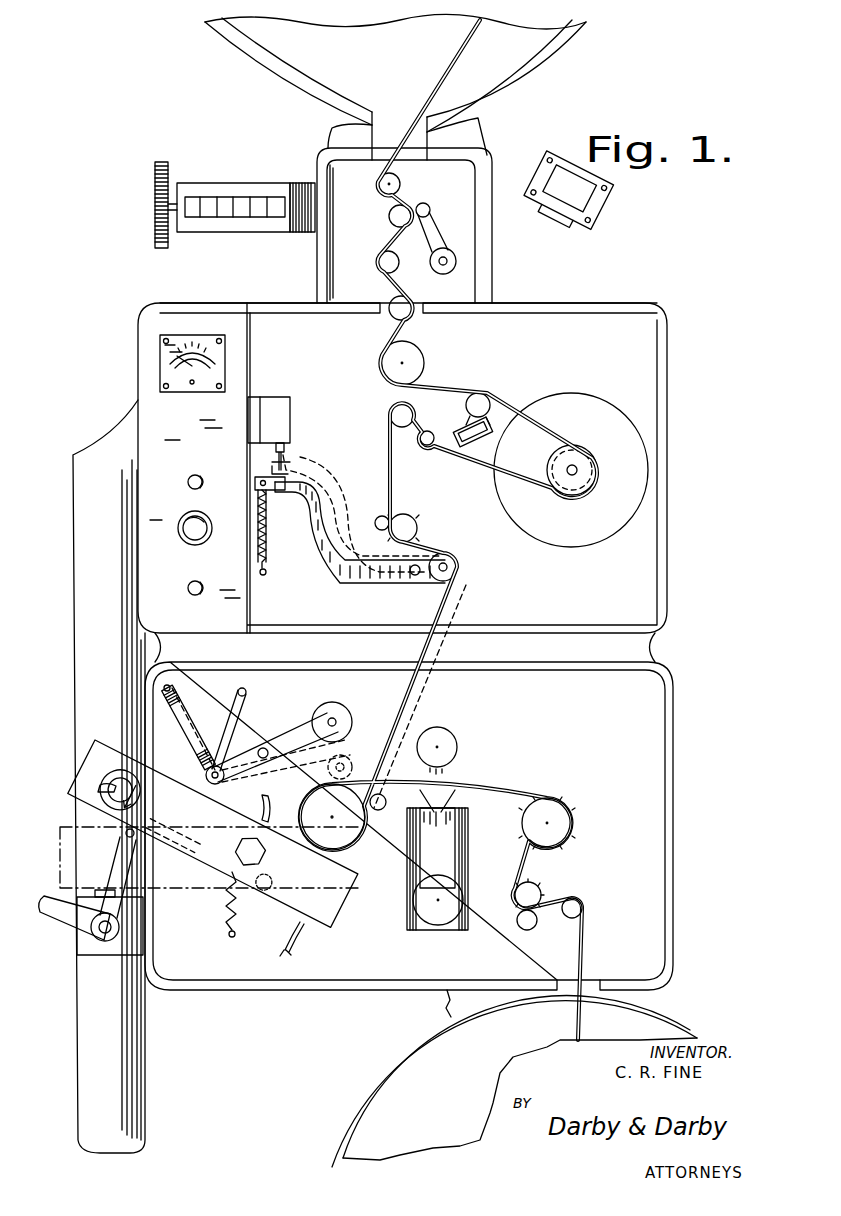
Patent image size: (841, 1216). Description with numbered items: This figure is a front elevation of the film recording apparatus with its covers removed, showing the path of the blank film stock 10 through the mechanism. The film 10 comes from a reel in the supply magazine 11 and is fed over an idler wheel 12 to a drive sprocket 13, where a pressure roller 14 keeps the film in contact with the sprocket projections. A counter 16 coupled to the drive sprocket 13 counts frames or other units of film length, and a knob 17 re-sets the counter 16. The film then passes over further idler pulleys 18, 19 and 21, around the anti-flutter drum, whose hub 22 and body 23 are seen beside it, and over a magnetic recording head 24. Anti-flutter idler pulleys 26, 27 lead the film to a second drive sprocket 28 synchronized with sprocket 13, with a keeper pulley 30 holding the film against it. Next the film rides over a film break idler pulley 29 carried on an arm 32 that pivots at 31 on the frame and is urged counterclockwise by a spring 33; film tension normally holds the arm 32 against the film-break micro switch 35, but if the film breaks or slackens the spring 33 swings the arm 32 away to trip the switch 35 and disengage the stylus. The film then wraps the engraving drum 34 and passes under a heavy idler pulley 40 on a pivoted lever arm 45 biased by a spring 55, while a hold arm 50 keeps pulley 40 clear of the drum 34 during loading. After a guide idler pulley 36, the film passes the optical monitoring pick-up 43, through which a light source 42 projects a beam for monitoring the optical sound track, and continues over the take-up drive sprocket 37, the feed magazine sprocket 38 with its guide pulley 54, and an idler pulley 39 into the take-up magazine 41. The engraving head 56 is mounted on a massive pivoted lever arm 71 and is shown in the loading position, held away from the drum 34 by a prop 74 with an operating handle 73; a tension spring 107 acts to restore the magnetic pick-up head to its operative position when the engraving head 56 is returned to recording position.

The blank film stock 10 is at (458, 68).
The supply magazine 11 is at (545, 62).
The idler wheel 12 is at (400, 182).
The drive sprocket 13 is at (390, 219).
The pressure roller 14 is at (430, 208).
The counter 16 is at (252, 182).
The knob 17 is at (160, 163).
The idler pulley 18 is at (398, 267).
The idler pulley 19 is at (390, 313).
The idler pulley 21 is at (425, 360).
The reel hub 22 is at (597, 470).
The tape reel 23 is at (620, 410).
The magnetic recording head 24 is at (500, 404).
The anti-flutter idler pulley 26 is at (437, 447).
The anti-flutter idler pulley 27 is at (391, 416).
The drive sprocket 28 is at (418, 527).
The film break idler pulley 29 is at (457, 566).
The keeper pulley 30 is at (375, 521).
The pivot 31 is at (412, 577).
The arm 32 is at (330, 576).
The spring 33 is at (280, 552).
The engraving drum 34 is at (350, 795).
The film-break micro switch 35 is at (290, 408).
The guide idler pulley 36 is at (380, 812).
The take-up drive sprocket 37 is at (565, 816).
The feed magazine sprocket 38 is at (541, 889).
The idler pulley 39 is at (583, 909).
The heavy idler pulley 40 is at (342, 697).
The take-up magazine 41 is at (395, 1045).
The light source 42 is at (453, 746).
The optical monitoring pick-up 43 is at (470, 792).
The pivoted lever arm 45 is at (300, 735).
The hold arm 50 is at (240, 713).
The guide pulley 54 is at (532, 927).
The spring 55 is at (190, 715).
The engraving head 56 is at (341, 934).
The lever arm 71 is at (184, 855).
The operating handle 73 is at (52, 918).
The prop 74 is at (120, 858).
The tension spring 107 is at (215, 908).